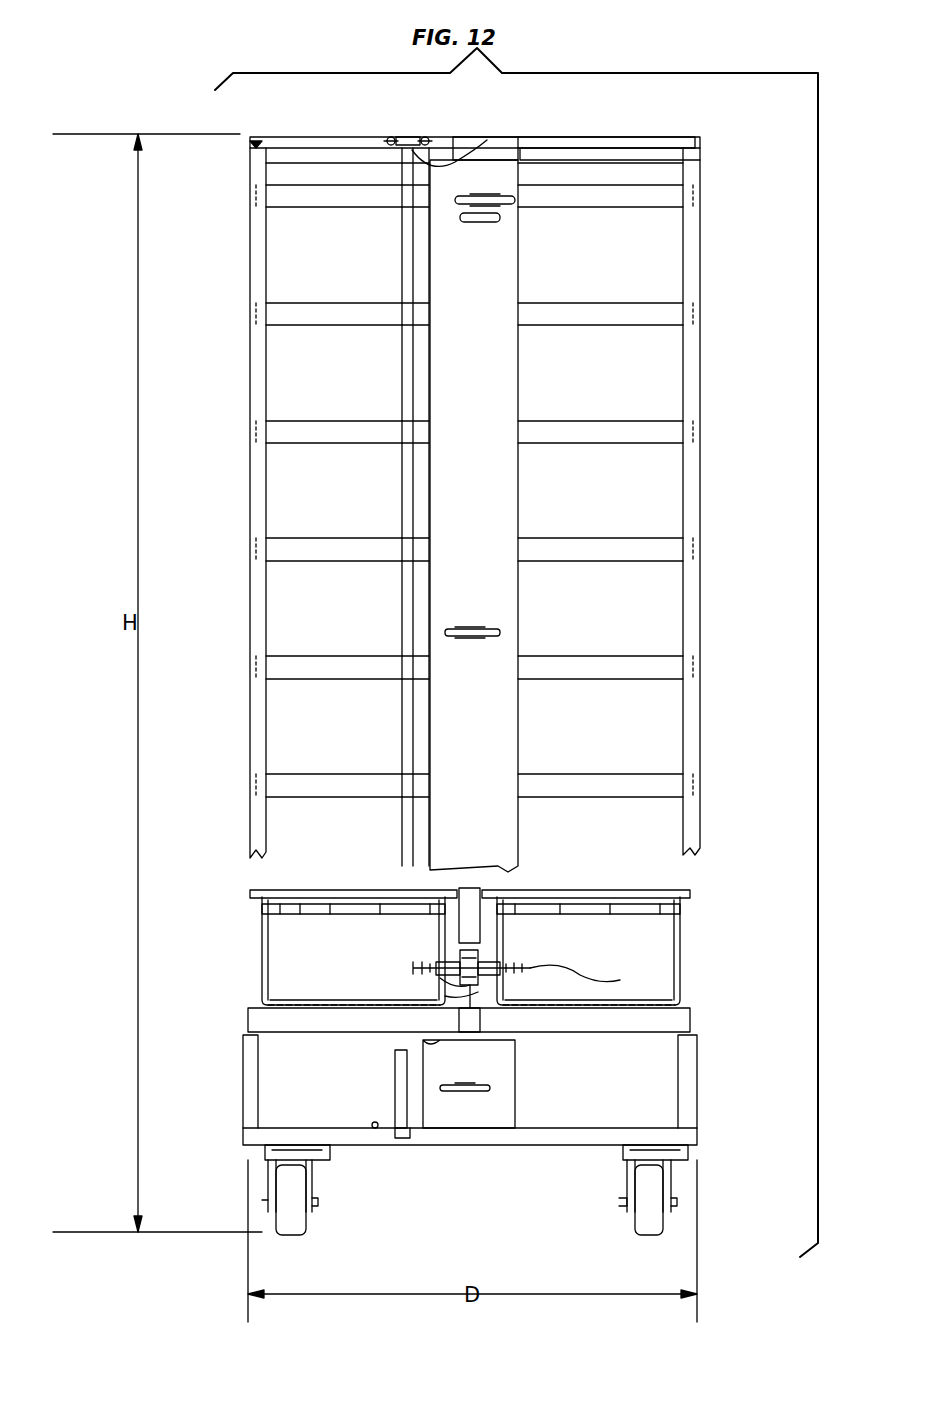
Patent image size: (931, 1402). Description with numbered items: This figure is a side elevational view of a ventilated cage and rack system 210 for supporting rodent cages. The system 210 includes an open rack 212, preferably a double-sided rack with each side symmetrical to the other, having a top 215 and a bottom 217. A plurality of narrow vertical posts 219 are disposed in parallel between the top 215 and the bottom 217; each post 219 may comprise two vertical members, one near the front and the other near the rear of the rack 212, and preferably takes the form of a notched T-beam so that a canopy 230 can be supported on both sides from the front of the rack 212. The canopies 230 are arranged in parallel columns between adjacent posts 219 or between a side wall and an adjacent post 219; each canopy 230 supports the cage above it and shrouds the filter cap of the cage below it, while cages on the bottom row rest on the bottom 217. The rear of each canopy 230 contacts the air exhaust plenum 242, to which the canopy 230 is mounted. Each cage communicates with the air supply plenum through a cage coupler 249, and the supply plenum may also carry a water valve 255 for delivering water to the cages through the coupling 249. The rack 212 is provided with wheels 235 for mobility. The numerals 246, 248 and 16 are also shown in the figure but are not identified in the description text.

The ventilated cage and rack system 210 is at (228, 442).
The rack 212 is at (702, 525).
The top 215 is at (614, 150).
The canopy 230 is at (333, 198).
The vertical column 246 is at (474, 516).
The air exhaust plenum 242 is at (482, 895).
The connector 248 is at (478, 958).
The water valve 255 is at (432, 962).
The cage coupler 249 is at (445, 996).
The container 16 is at (290, 972).
The bottom 217 is at (542, 1140).
The post 219 is at (243, 1082).
The wheels 235 is at (270, 1222).